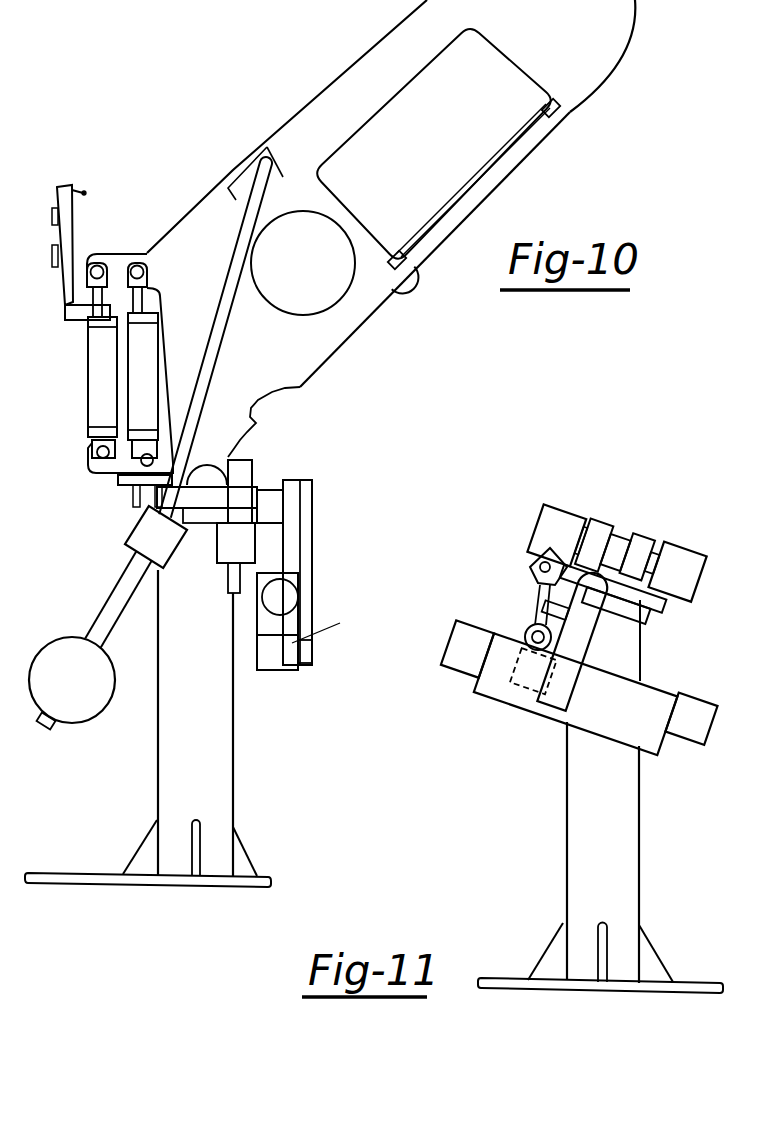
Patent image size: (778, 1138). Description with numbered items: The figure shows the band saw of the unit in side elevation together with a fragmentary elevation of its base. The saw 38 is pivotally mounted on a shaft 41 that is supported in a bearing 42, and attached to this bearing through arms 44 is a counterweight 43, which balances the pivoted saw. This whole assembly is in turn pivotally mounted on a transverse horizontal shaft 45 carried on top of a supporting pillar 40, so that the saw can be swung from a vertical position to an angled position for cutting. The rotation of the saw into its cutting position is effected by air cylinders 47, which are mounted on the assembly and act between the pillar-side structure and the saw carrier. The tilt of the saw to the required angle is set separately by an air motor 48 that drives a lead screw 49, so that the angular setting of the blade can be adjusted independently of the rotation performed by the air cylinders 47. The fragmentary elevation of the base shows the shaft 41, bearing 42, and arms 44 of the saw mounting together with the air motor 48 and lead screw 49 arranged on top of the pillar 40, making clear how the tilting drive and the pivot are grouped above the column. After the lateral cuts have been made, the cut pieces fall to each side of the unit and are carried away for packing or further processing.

In FIG. 10, the saw 38 is at (475, 188).
In FIG. 10, the supporting pillar 40 is at (234, 759).
In FIG. 11, the supporting pillar 40 is at (642, 843).
In FIG. 11, the shaft 41 is at (622, 538).
In FIG. 10, the bearing 42 is at (223, 460).
In FIG. 11, the bearing 42 is at (568, 517).
In FIG. 11, the counterweight 43 is at (532, 705).
In FIG. 10, the arms 44 is at (115, 590).
In FIG. 10, the transverse horizontal shaft 45 is at (212, 502).
In FIG. 11, the transverse horizontal shaft 45 is at (642, 640).
In FIG. 10, the air cylinders 47 is at (147, 398).
In FIG. 10, the air motor 48 is at (255, 552).
In FIG. 11, the air motor 48 is at (515, 673).
In FIG. 10, the lead screw 49 is at (237, 500).
In FIG. 11, the lead screw 49 is at (533, 597).